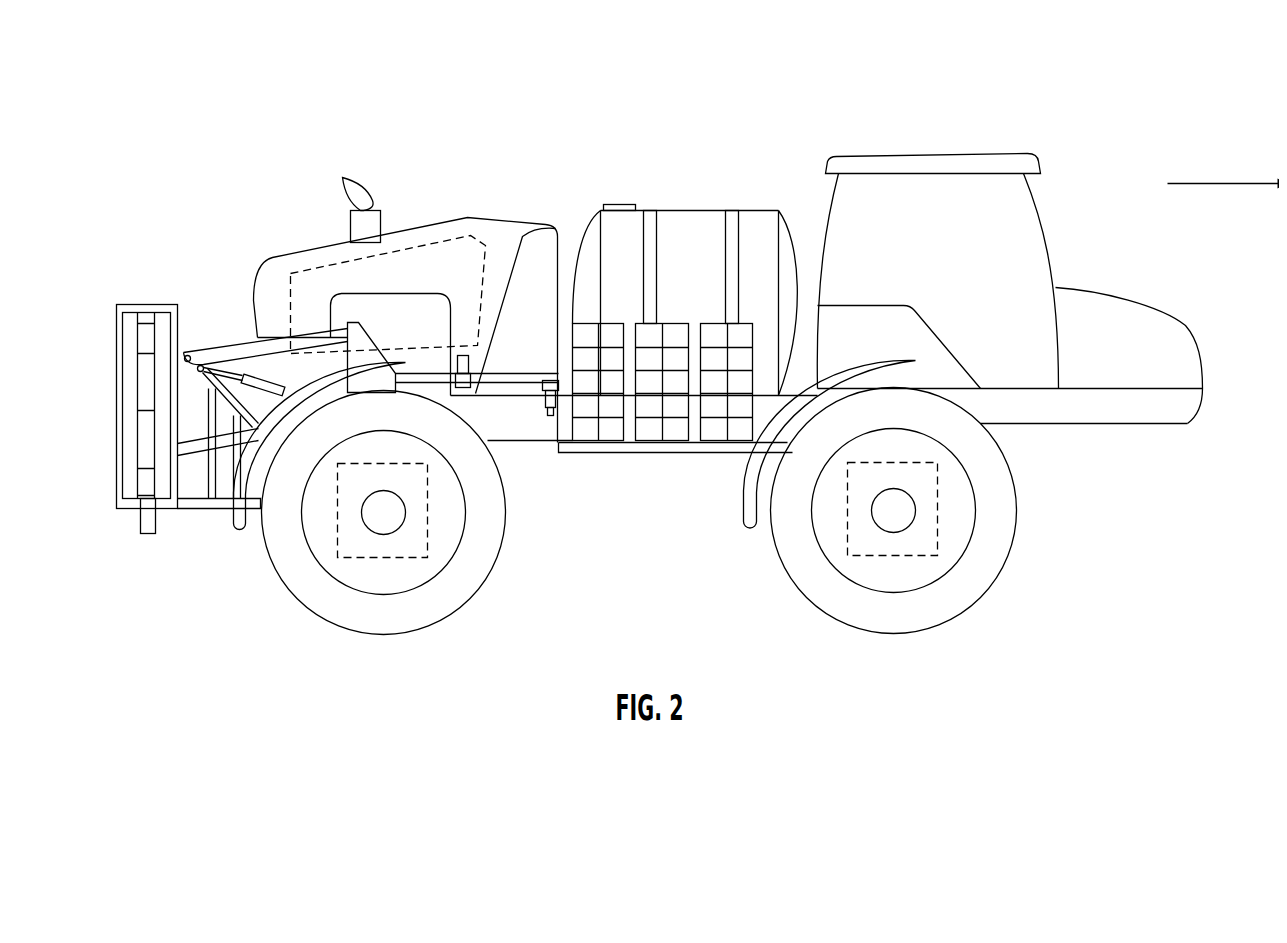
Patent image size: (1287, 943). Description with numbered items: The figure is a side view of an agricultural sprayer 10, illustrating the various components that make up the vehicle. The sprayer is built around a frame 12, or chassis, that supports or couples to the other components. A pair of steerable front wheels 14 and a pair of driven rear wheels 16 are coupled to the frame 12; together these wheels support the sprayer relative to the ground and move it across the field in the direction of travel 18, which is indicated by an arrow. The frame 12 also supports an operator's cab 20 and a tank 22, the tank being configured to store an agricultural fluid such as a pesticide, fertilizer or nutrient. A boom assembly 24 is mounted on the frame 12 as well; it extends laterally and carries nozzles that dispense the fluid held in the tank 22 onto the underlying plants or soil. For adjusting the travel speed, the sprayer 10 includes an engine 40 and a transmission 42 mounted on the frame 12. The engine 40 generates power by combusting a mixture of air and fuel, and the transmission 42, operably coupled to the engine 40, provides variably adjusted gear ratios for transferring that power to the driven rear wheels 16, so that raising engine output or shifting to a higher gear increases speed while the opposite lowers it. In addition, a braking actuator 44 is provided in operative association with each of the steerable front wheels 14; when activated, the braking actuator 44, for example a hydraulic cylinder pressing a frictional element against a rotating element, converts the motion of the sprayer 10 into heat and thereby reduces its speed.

The agricultural sprayer 10 is at (642, 369).
The frame 12 is at (1102, 425).
The steerable front wheels 14 is at (988, 586).
The driven rear wheels 16 is at (295, 588).
The direction of travel 18 is at (1232, 182).
The operator's cab 20 is at (1000, 155).
The tank 22 is at (683, 210).
The boom assembly 24 is at (147, 286).
The engine 40 is at (432, 243).
The transmission 42 is at (400, 557).
The braking actuator 44 is at (910, 556).